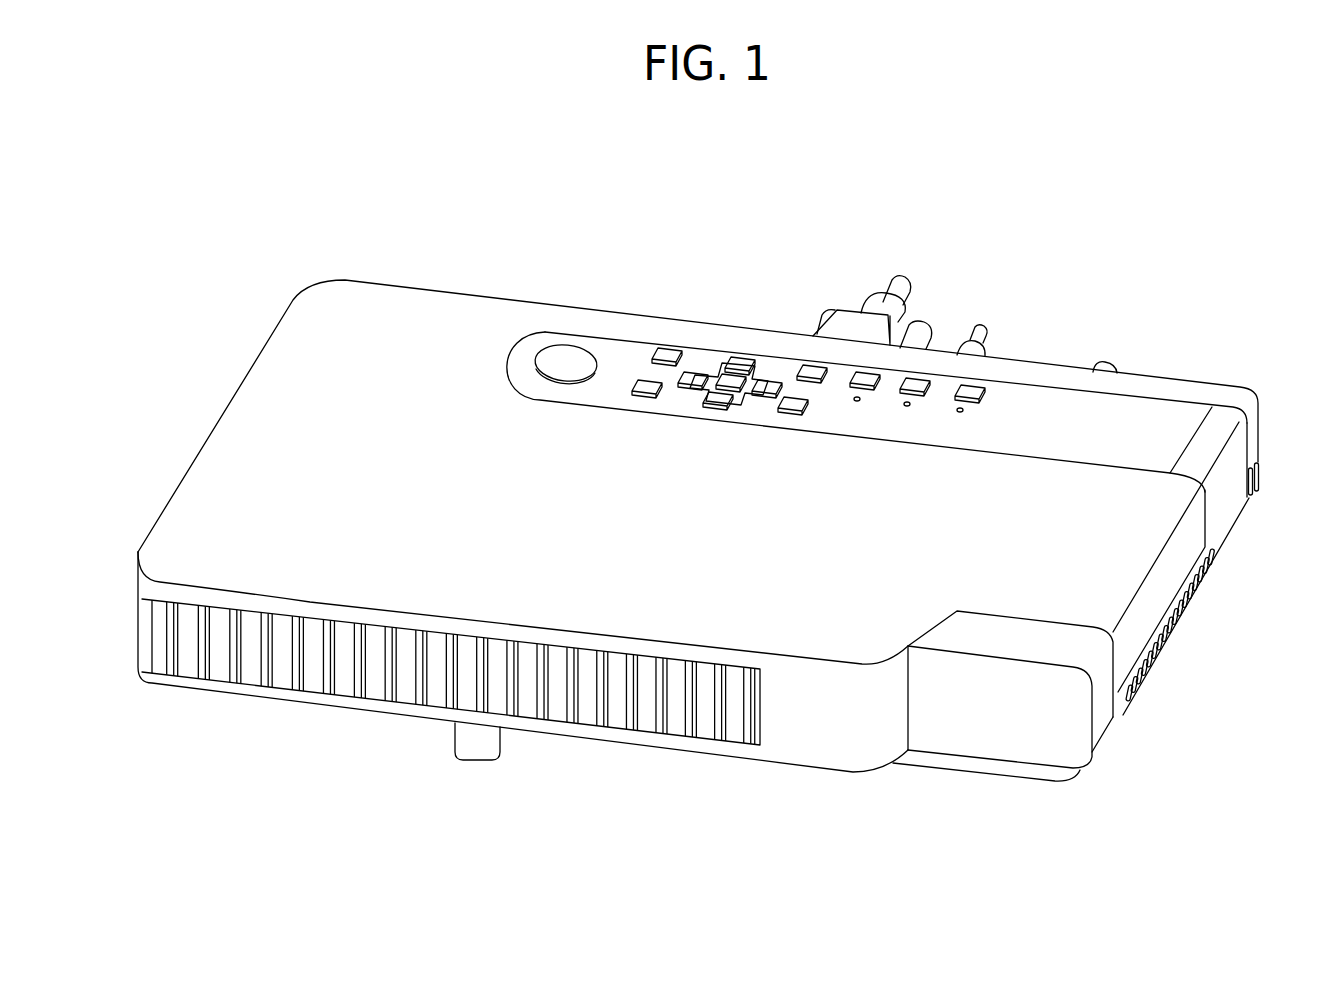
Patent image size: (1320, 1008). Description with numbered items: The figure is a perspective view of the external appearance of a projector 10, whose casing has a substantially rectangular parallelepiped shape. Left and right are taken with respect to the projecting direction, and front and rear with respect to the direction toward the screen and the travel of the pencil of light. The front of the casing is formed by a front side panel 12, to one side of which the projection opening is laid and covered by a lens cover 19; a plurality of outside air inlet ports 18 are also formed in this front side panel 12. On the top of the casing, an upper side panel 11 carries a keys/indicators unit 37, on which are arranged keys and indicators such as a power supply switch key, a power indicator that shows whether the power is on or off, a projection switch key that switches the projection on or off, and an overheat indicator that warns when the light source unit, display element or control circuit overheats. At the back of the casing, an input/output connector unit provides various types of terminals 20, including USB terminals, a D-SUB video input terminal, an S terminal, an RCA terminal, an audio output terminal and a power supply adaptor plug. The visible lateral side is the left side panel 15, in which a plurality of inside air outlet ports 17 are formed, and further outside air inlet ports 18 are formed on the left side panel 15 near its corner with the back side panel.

The projector 10 is at (704, 497).
The upper side panel 11 is at (475, 308).
The front side panel 12 is at (803, 730).
The left side panel 15 is at (1163, 580).
The inside air outlet ports 17 is at (1152, 662).
The outside air inlet ports 18 is at (697, 727).
The lens cover 19 is at (1038, 738).
The terminals 20 is at (938, 280).
The keys/indicators unit 37 is at (742, 318).